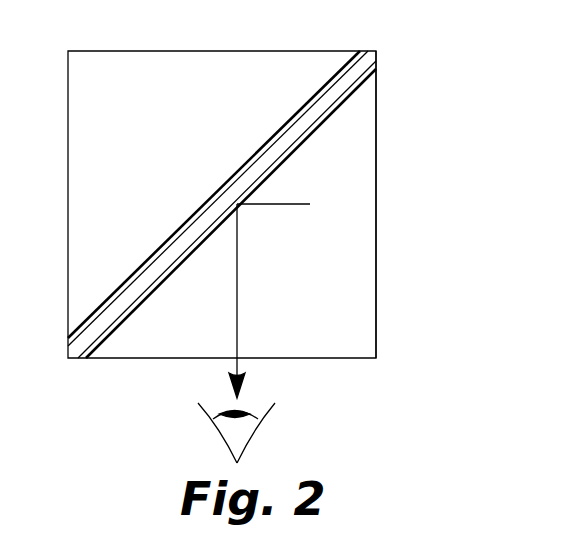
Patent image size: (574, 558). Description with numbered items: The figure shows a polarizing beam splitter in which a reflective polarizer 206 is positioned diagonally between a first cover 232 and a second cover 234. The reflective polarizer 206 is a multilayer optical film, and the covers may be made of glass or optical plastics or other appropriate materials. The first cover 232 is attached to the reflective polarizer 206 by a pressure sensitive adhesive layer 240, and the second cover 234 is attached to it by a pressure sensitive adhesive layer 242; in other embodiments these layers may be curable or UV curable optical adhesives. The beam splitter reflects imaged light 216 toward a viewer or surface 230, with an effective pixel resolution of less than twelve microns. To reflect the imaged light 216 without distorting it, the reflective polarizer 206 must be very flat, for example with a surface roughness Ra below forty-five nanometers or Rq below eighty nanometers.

The reflective polarizer 206 is at (261, 192).
The imaged light 216 is at (237, 288).
The viewer or surface 230 is at (247, 438).
The first cover 232 is at (102, 65).
The second cover 234 is at (365, 232).
The pressure sensitive adhesive layer 240 is at (133, 280).
The pressure sensitive adhesive layer 242 is at (158, 282).